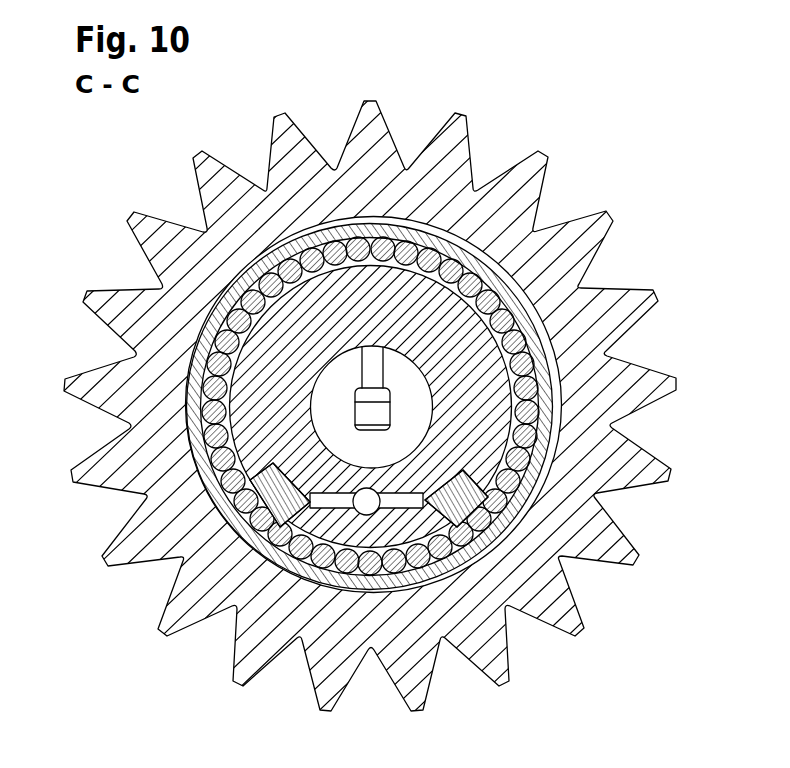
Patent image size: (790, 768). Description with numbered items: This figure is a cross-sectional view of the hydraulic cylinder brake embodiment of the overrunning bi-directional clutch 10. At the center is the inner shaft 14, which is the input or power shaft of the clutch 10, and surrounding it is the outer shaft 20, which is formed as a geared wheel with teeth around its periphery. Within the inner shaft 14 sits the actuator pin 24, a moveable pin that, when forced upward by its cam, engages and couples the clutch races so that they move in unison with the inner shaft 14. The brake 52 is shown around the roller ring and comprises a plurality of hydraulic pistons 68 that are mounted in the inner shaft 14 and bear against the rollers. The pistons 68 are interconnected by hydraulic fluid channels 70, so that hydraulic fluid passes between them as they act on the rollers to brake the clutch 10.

The overrunning bi-directional clutch 10 is at (503, 132).
The inner shaft 14 is at (333, 296).
The outer shaft 20 is at (187, 269).
The actuator pin 24 is at (363, 409).
The brake 52 is at (235, 537).
The hydraulic pistons 68 is at (262, 520).
The hydraulic fluid channels 70 is at (400, 502).